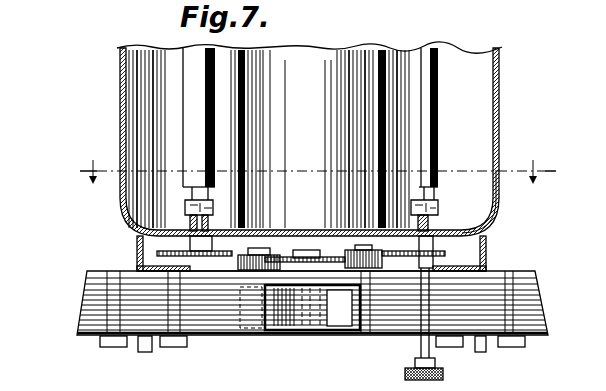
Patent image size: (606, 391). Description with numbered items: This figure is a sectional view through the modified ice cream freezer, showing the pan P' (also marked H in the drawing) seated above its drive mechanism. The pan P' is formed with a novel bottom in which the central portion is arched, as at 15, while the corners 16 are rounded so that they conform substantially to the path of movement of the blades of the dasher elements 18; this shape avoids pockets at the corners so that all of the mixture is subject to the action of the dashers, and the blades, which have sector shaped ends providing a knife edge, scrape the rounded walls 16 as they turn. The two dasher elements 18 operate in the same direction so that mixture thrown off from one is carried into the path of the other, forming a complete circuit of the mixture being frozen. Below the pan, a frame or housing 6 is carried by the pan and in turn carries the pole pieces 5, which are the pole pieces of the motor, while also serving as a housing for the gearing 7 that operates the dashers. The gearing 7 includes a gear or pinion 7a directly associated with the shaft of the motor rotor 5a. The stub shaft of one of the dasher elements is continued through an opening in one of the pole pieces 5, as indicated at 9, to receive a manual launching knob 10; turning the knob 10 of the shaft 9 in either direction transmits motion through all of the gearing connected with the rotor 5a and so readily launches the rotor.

The heating vessel H is at (306, 139).
The pan P' is at (507, 201).
The pole pieces 5 is at (90, 305).
The rotor 5a is at (300, 327).
The frame or housing 6 is at (506, 249).
The gearing 7 is at (270, 250).
The gear or pinion 7a is at (302, 243).
The shaft 9 is at (421, 350).
The manual launching knob 10 is at (443, 373).
The arched bottom portion 15 is at (320, 139).
The rounded corners 16 is at (162, 101).
The dasher elements 18 is at (219, 162).